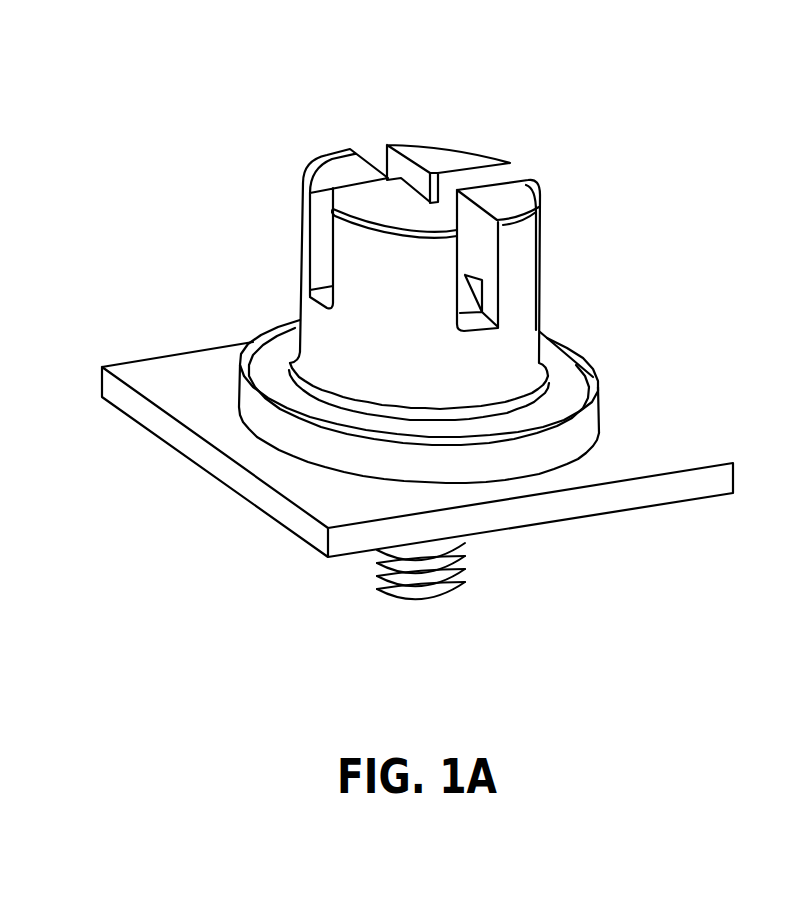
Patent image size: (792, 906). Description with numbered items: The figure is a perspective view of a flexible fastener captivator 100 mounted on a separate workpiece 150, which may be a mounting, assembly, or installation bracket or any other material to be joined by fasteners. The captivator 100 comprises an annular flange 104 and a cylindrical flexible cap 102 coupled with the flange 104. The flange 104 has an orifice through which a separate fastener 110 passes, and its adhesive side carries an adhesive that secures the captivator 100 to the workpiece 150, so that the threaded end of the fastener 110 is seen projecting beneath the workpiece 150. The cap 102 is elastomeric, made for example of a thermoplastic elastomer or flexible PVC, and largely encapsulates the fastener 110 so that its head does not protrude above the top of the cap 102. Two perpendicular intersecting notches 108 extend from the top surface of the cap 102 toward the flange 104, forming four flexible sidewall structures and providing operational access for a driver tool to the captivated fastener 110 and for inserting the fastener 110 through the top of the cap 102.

The fastener captivator 100 is at (303, 155).
The flexible cap 102 is at (515, 253).
The flange 104 is at (570, 375).
The intersecting notches 108 is at (375, 150).
The fastener 110 is at (442, 590).
The workpiece 150 is at (662, 443).